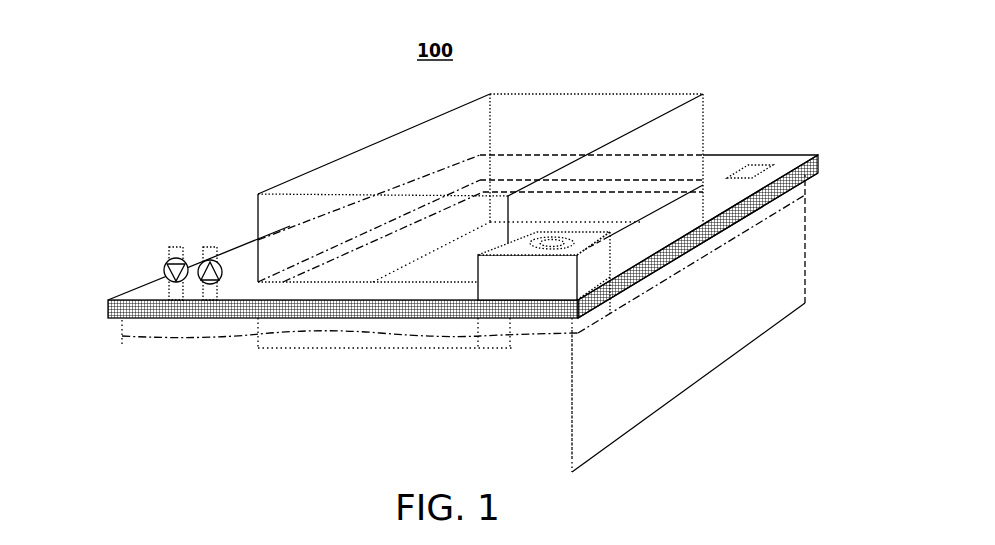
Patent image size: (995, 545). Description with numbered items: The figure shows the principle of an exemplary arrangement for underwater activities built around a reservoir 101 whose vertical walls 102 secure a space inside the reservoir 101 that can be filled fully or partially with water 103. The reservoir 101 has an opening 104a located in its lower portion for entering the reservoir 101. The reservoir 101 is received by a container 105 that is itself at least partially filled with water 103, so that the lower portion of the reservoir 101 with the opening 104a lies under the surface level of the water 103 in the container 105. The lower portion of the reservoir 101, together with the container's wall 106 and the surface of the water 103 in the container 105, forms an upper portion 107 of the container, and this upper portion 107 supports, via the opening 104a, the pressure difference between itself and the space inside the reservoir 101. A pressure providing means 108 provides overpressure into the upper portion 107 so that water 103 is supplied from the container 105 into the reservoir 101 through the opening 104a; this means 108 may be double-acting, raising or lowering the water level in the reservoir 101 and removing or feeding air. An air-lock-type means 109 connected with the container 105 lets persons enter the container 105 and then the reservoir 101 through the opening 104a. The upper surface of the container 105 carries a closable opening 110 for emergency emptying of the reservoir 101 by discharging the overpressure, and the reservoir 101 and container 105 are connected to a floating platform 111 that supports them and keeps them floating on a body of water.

The reservoir 101 is at (403, 142).
The vertical walls 102 is at (690, 143).
The water 103 is at (155, 325).
The opening 104a is at (388, 352).
The container 105 is at (688, 385).
The container's wall 106 is at (573, 403).
The upper portion of the container 107 is at (135, 298).
The pressure providing means 108 is at (175, 247).
The air-lock-type means 109 is at (598, 277).
The closable opening 110 is at (760, 160).
The floating platform 111 is at (692, 248).